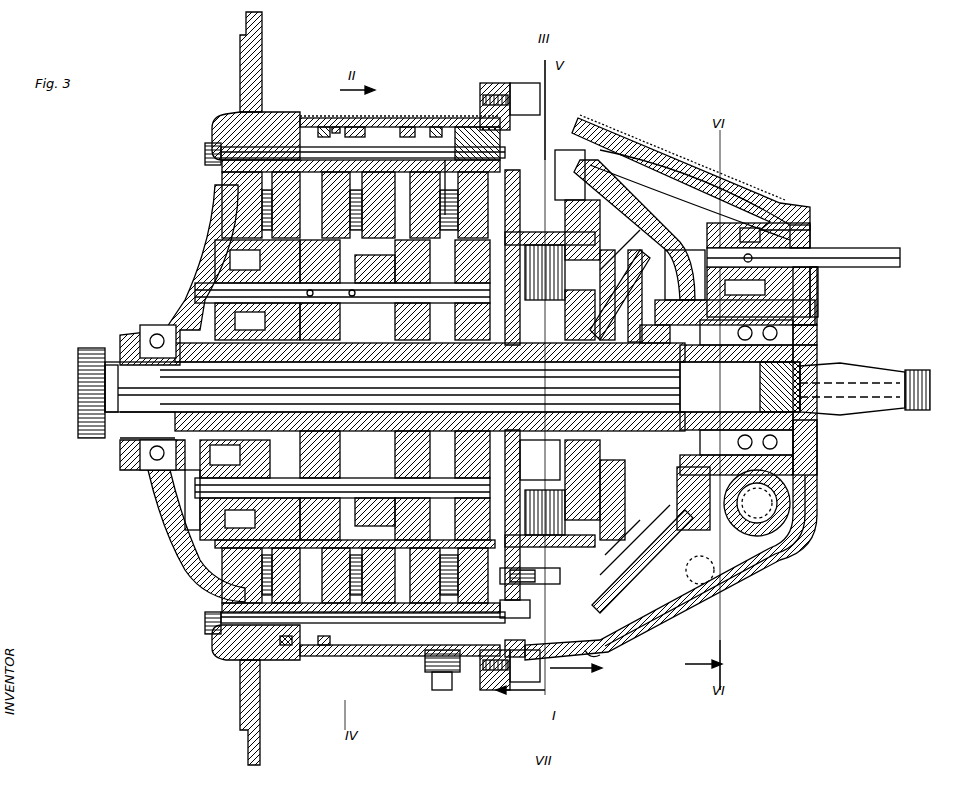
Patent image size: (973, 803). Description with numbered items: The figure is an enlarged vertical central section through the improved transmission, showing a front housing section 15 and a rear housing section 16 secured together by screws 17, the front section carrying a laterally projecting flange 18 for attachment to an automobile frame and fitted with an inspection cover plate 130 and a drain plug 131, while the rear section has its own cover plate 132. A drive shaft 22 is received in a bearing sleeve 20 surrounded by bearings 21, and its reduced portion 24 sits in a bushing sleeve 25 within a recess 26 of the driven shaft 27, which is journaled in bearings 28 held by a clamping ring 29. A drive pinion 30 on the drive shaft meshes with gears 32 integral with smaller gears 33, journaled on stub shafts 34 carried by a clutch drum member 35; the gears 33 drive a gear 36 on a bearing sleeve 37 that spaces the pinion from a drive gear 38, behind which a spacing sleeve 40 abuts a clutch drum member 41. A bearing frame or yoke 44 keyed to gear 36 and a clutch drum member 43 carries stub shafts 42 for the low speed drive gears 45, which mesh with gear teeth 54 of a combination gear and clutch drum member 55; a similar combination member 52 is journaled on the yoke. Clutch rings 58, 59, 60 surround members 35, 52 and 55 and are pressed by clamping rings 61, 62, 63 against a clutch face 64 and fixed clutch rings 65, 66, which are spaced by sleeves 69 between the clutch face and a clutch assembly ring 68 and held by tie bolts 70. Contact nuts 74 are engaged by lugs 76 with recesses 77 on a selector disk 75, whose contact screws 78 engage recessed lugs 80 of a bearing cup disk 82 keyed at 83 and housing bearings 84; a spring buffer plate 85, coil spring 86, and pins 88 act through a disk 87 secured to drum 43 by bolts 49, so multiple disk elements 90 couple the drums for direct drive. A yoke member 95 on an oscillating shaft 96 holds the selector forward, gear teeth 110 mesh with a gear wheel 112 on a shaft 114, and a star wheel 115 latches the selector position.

The front housing section 15 is at (192, 240).
The rear housing section 16 is at (770, 570).
The screws 17 is at (530, 660).
The laterally projecting flange 18 is at (243, 718).
The bearing sleeve 20 is at (112, 425).
The bearings 21 is at (150, 325).
The drive shaft 22 is at (92, 395).
The reduced portion 24 is at (800, 445).
The bushing sleeve 25 is at (820, 320).
The recess 26 is at (850, 375).
The driven shaft 27 is at (910, 412).
The bearings 28 is at (700, 500).
The clamping ring 29 is at (825, 332).
The drive pinion 30 is at (160, 480).
The gears 32 is at (225, 230).
The smaller gears 33 is at (240, 260).
The stub shafts 34 is at (150, 538).
The clutch drum member 35 is at (220, 545).
The gear 36 is at (297, 485).
The bearing sleeve 37 is at (185, 490).
The drive gear 38 is at (422, 485).
The spacing sleeve 40 is at (540, 456).
The clutch drum member 41 is at (620, 270).
The stub shafts 42 is at (440, 525).
The clutch drum member 43 is at (520, 240).
The bearing frame or yoke 44 is at (292, 290).
The low speed drive gears 45 is at (356, 377).
The screws or bolts 49 is at (690, 190).
The combination gear and clutch member 52 is at (335, 615).
The gear teeth 54 is at (490, 690).
The combination gear and clutch drum member 55 is at (530, 579).
The clutch ring 58 is at (300, 135).
The clutch ring 59 is at (370, 165).
The clutch ring 60 is at (485, 90).
The clutch clamping ring 61 is at (320, 130).
The clutch clamping ring 62 is at (405, 128).
The clutch clamping ring 63 is at (498, 100).
The clutch face 64 is at (208, 155).
The fixed clutch ring 65 is at (352, 130).
The fixed clutch ring 66 is at (462, 135).
The clutch assembly ring 68 is at (525, 618).
The spacing sleeves 69 is at (245, 135).
The tie bolts 70 is at (212, 143).
The contact nuts 74 is at (562, 150).
The selector disk 75 is at (640, 200).
The lugs 76 is at (596, 160).
The concave recesses 77 is at (565, 150).
The contact screws 78 is at (730, 223).
The recessed lugs 80 is at (700, 570).
The bearing cup disk 82 is at (655, 235).
The key 83 is at (657, 325).
The bearings 84 is at (740, 387).
The spring buffer plate 85 is at (650, 545).
The coil spring 86 is at (625, 520).
The disk 87 is at (685, 665).
The clutch actuating pins 88 is at (640, 560).
The multiple disk elements 90 is at (600, 660).
The yoke member 95 is at (815, 268).
The oscillating shaft 96 is at (790, 520).
The gear teeth 110 is at (690, 270).
The gear wheel 112 is at (755, 223).
The shaft 114 is at (805, 235).
The star wheel 115 is at (750, 228).
The inspection or cover plate 130 is at (445, 160).
The drain plug 131 is at (435, 690).
The inspection or cover plate 132 is at (665, 200).